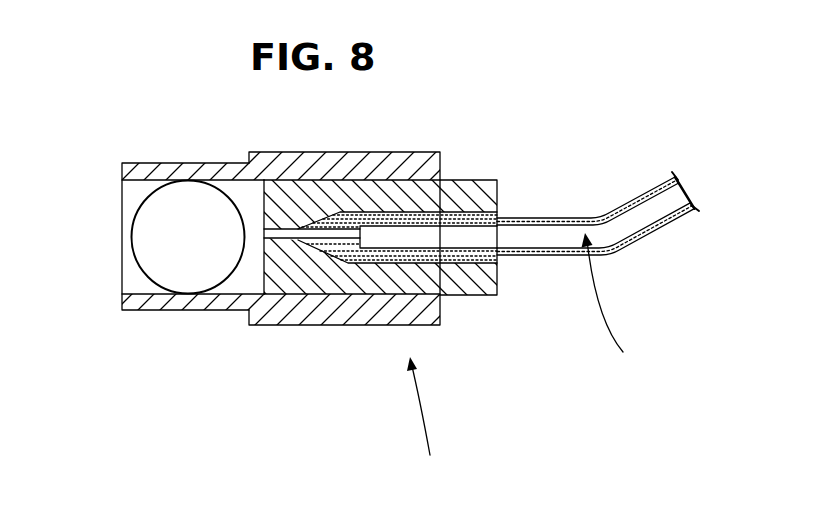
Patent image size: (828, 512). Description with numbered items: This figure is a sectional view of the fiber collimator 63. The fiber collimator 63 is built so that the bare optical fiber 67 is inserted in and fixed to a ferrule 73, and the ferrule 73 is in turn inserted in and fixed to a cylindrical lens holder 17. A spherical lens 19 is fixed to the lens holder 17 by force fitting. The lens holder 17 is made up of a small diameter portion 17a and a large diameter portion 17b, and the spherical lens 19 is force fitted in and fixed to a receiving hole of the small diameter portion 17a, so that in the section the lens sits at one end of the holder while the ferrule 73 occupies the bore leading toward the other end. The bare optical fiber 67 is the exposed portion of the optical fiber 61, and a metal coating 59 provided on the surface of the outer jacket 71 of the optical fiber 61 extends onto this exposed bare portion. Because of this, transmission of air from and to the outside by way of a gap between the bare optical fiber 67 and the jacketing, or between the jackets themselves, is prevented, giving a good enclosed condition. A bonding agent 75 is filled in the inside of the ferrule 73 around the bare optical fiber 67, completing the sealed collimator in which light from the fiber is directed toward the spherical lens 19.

The lens holder 17 is at (299, 253).
The small diameter portion 17a is at (172, 310).
The large diameter portion 17b is at (422, 320).
The spherical lens 19 is at (162, 232).
The metal coating 59 is at (657, 229).
The optical fiber 61 is at (622, 304).
The fiber collimator 63 is at (420, 423).
The bare optical fiber 67 is at (280, 240).
The outer jacket 71 is at (437, 232).
The ferrule 73 is at (475, 297).
The bonding agent 75 is at (350, 270).